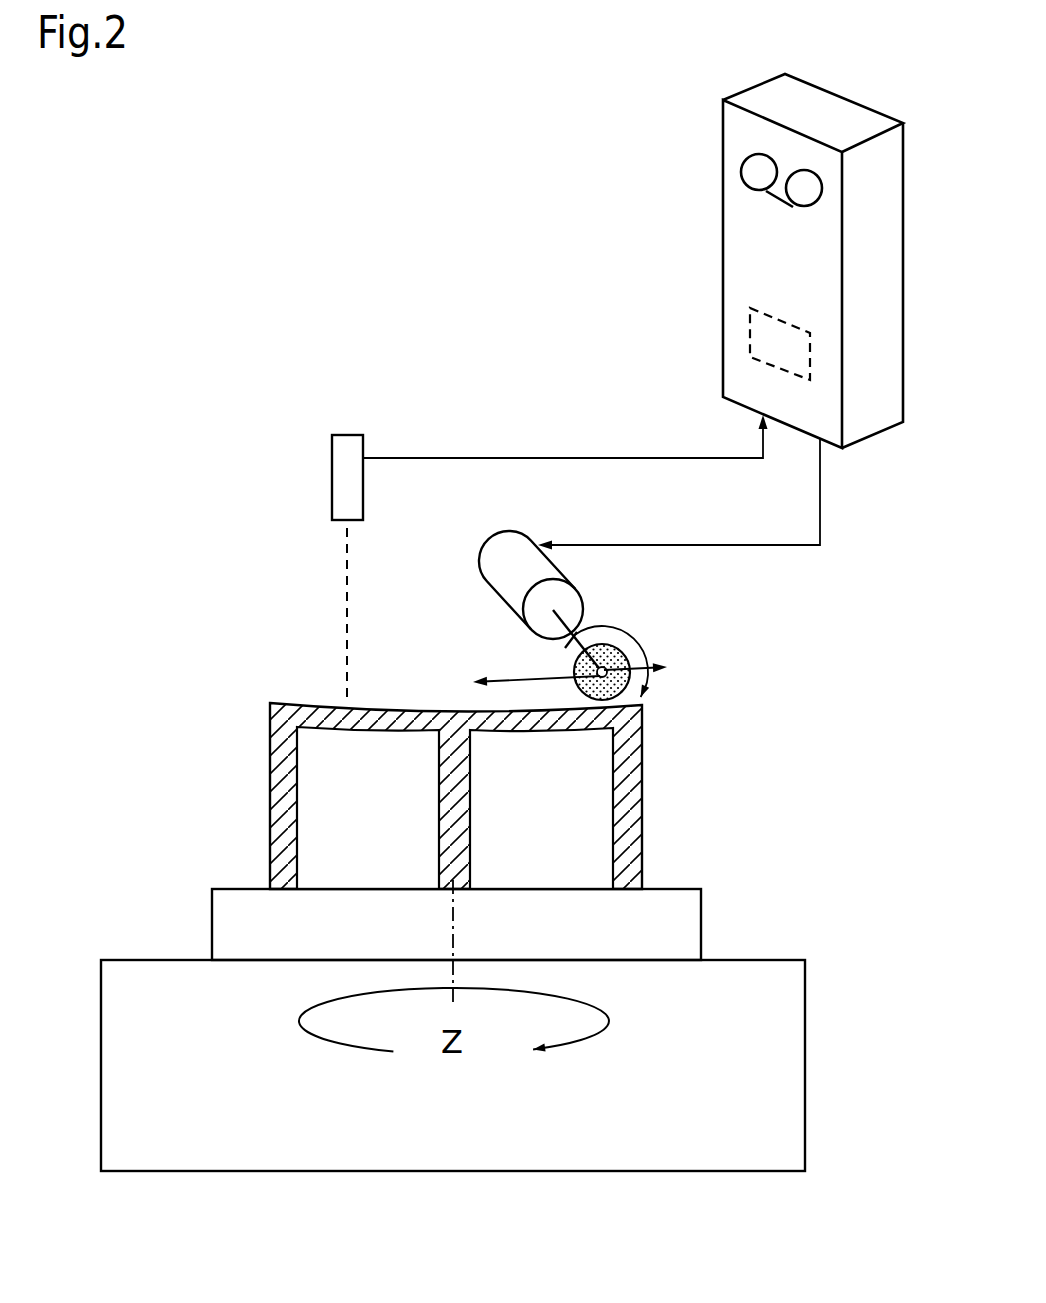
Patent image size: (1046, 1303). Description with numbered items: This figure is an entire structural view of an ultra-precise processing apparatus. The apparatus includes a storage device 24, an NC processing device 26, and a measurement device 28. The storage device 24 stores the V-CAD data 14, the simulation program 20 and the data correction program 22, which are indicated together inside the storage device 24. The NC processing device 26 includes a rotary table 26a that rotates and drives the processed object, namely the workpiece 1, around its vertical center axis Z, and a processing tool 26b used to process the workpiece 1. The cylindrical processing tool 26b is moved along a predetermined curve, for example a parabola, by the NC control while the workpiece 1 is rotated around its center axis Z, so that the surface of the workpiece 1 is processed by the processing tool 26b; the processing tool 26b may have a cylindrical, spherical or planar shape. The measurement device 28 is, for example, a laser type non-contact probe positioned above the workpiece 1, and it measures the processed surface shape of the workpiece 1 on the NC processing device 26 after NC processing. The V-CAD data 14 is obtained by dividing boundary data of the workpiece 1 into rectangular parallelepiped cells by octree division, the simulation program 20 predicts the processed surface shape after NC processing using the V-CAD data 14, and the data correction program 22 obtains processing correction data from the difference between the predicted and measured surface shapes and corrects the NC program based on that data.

The workpiece 1 is at (257, 715).
The V-CAD data 14 is at (644, 359).
The simulation program 20 is at (644, 359).
The data correction program 22 is at (644, 359).
The storage device 24 is at (690, 261).
The NC processing device 26 is at (655, 569).
The rotary table 26a is at (677, 917).
The processing tool 26b is at (613, 657).
The measurement device 28 is at (337, 477).